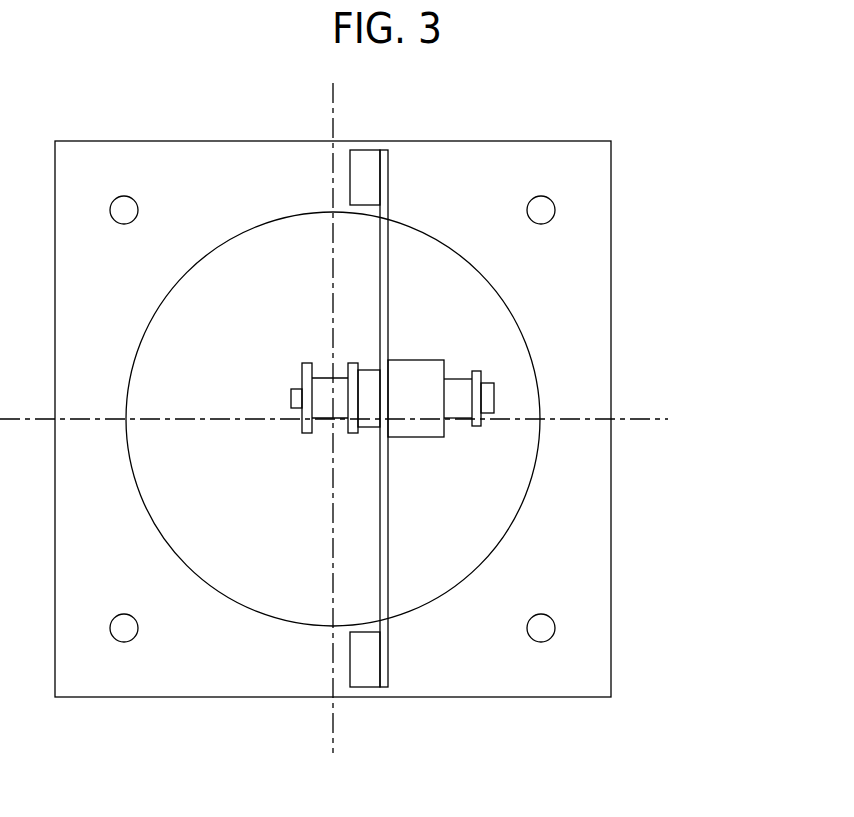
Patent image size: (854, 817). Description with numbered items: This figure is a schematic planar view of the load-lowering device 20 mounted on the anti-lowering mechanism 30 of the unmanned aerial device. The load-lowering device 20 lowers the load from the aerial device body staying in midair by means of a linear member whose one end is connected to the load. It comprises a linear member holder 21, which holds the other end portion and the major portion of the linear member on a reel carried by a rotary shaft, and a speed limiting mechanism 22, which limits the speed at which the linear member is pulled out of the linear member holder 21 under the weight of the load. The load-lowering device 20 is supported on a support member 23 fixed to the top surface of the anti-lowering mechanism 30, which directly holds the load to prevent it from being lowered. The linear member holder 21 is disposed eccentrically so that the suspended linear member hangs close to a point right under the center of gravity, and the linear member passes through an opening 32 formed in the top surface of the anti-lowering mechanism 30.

The load-lowering device 20 is at (392, 240).
The linear member holder 21 is at (307, 363).
The speed limiting mechanism 22 is at (420, 360).
The support member 23 is at (380, 280).
The anti-lowering mechanism 30 is at (626, 280).
The opening 32 is at (537, 468).